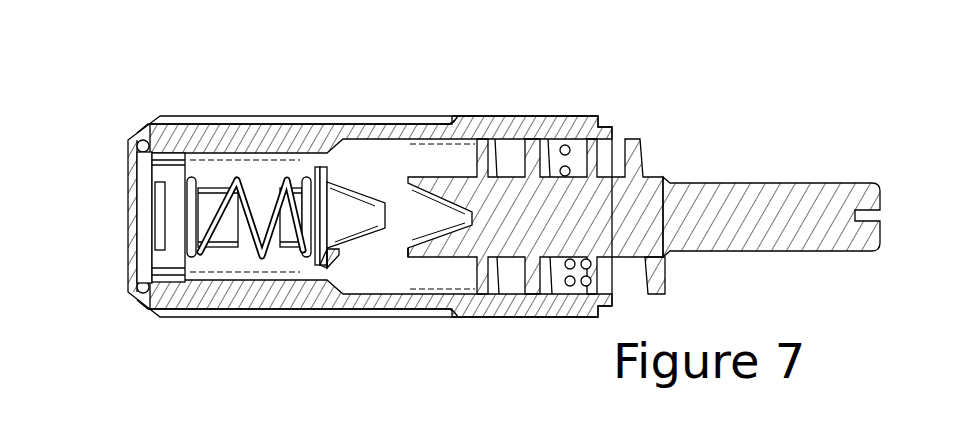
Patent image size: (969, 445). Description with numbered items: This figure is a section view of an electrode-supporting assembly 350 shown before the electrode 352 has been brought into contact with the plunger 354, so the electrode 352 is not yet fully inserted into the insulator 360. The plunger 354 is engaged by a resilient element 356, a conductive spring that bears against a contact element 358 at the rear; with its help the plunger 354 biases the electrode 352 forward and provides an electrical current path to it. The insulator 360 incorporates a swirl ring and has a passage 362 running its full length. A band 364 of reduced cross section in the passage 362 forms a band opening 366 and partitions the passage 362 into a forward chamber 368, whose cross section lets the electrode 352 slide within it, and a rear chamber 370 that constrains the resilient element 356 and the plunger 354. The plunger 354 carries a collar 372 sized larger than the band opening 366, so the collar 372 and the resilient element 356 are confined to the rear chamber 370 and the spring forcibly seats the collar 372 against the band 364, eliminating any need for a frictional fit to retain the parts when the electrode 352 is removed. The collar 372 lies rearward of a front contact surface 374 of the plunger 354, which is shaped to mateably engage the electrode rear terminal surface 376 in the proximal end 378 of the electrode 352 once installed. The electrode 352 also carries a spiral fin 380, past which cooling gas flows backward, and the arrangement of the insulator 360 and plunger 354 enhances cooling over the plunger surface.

The electrode-supporting assembly 350 is at (680, 125).
The electrode 352 is at (782, 172).
The plunger 354 is at (350, 182).
The resilient element 356 is at (238, 180).
The contact element 358 is at (163, 223).
The insulator 360 is at (558, 113).
The passage 362 is at (393, 178).
The band 364 is at (330, 258).
The band opening 366 is at (325, 240).
The forward chamber 368 is at (418, 156).
The rear chamber 370 is at (208, 173).
The collar 372 is at (328, 250).
The front contact surface 374 is at (341, 203).
The electrode rear terminal surface 376 is at (450, 121).
The proximal end 378 is at (417, 261).
The spiral fin 380 is at (660, 270).